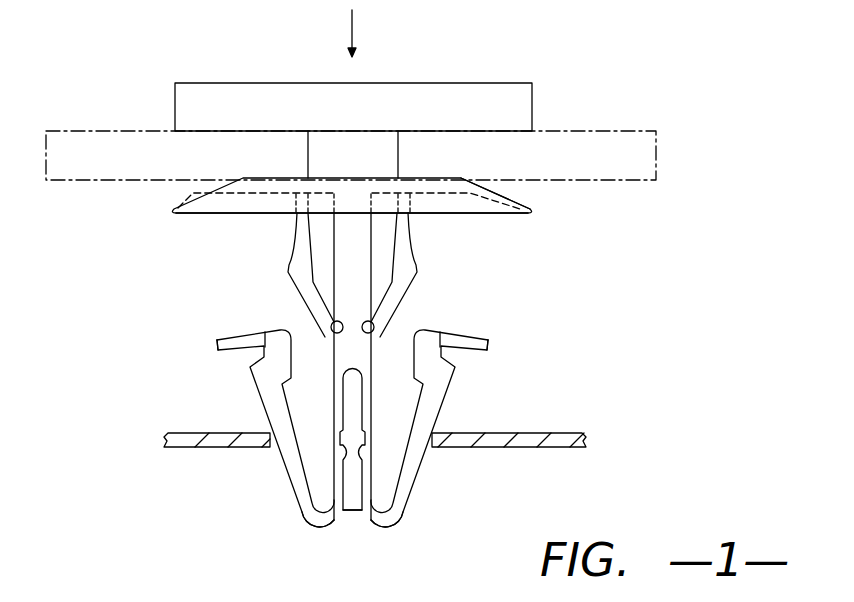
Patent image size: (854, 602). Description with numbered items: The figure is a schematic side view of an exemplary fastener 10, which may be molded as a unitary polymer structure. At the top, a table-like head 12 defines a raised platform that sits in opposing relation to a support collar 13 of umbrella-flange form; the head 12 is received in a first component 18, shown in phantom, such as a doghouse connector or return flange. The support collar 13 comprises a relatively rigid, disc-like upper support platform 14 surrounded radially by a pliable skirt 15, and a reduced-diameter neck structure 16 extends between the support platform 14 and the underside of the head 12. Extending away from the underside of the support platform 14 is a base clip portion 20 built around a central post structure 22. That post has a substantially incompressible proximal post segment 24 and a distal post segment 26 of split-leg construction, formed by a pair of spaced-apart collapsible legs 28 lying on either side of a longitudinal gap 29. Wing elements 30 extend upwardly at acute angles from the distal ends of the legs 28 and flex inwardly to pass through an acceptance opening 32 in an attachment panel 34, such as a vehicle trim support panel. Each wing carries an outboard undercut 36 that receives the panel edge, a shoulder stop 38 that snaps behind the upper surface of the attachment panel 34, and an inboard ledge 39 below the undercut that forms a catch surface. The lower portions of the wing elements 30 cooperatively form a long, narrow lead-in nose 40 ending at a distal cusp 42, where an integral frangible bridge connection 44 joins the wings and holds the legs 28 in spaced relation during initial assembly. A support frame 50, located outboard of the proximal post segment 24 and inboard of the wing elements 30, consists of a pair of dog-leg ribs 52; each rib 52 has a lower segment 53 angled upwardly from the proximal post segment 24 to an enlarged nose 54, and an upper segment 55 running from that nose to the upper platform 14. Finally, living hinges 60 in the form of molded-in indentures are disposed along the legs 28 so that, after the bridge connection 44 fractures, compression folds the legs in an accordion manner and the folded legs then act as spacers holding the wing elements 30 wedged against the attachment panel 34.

The fastener 10 is at (126, 77).
The head 12 is at (250, 82).
The support collar 13 is at (522, 194).
The upper support platform 14 is at (427, 177).
The pliable skirt 15 is at (505, 216).
The neck structure 16 is at (372, 148).
The first component 18 is at (633, 128).
The base clip portion 20 is at (250, 382).
The central post structure 22 is at (381, 268).
The proximal post segment 24 is at (353, 265).
The distal post segment 26 is at (412, 432).
The collapsible legs 28 is at (337, 461).
The longitudinal gap 29 is at (402, 504).
The wing elements 30 is at (330, 400).
The acceptance opening 32 is at (437, 458).
The attachment panel 34 is at (566, 432).
The outboard undercut 36 is at (240, 362).
The shoulder stop 38 is at (217, 339).
The inboard ledge 39 is at (277, 412).
The lead-in nose 40 is at (290, 494).
The distal cusp 42 is at (342, 530).
The frangible bridge connection 44 is at (349, 517).
The support frame 50 is at (281, 273).
The ribs 52 is at (317, 322).
The lower segment 53 is at (327, 338).
The enlarged nose 54 is at (415, 255).
The upper segment 55 is at (300, 227).
The living hinges 60 is at (280, 497).